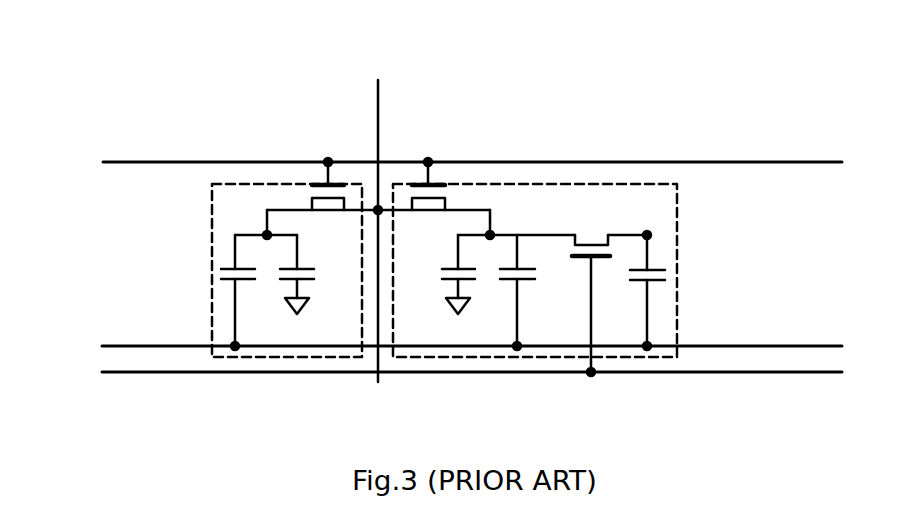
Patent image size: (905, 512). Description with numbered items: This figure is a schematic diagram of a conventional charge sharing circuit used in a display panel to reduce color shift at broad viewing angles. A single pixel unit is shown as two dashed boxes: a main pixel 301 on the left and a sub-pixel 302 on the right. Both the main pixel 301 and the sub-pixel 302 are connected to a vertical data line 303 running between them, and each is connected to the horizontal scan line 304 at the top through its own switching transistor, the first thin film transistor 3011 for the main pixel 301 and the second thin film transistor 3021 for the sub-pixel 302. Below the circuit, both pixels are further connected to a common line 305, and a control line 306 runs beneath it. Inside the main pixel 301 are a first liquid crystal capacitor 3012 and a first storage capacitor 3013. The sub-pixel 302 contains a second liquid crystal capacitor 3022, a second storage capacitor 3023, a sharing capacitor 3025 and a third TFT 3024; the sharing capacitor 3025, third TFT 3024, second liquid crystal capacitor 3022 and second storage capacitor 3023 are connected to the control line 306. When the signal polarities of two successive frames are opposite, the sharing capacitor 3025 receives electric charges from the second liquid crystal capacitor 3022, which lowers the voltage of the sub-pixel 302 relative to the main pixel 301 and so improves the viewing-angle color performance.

The main pixel 301 is at (210, 202).
The sub-pixel 302 is at (682, 270).
The data line 303 is at (381, 130).
The scan line 304 is at (110, 160).
The common line 305 is at (110, 345).
The control line 306 is at (118, 374).
The first thin film transistor 3011 is at (328, 212).
The first liquid crystal capacitor 3012 is at (279, 292).
The first storage capacitor 3013 is at (224, 292).
The second thin film transistor 3021 is at (427, 212).
The second liquid crystal capacitor 3022 is at (476, 292).
The second storage capacitor 3023 is at (512, 254).
The third TFT 3024 is at (592, 234).
The sharing capacitor 3025 is at (638, 292).